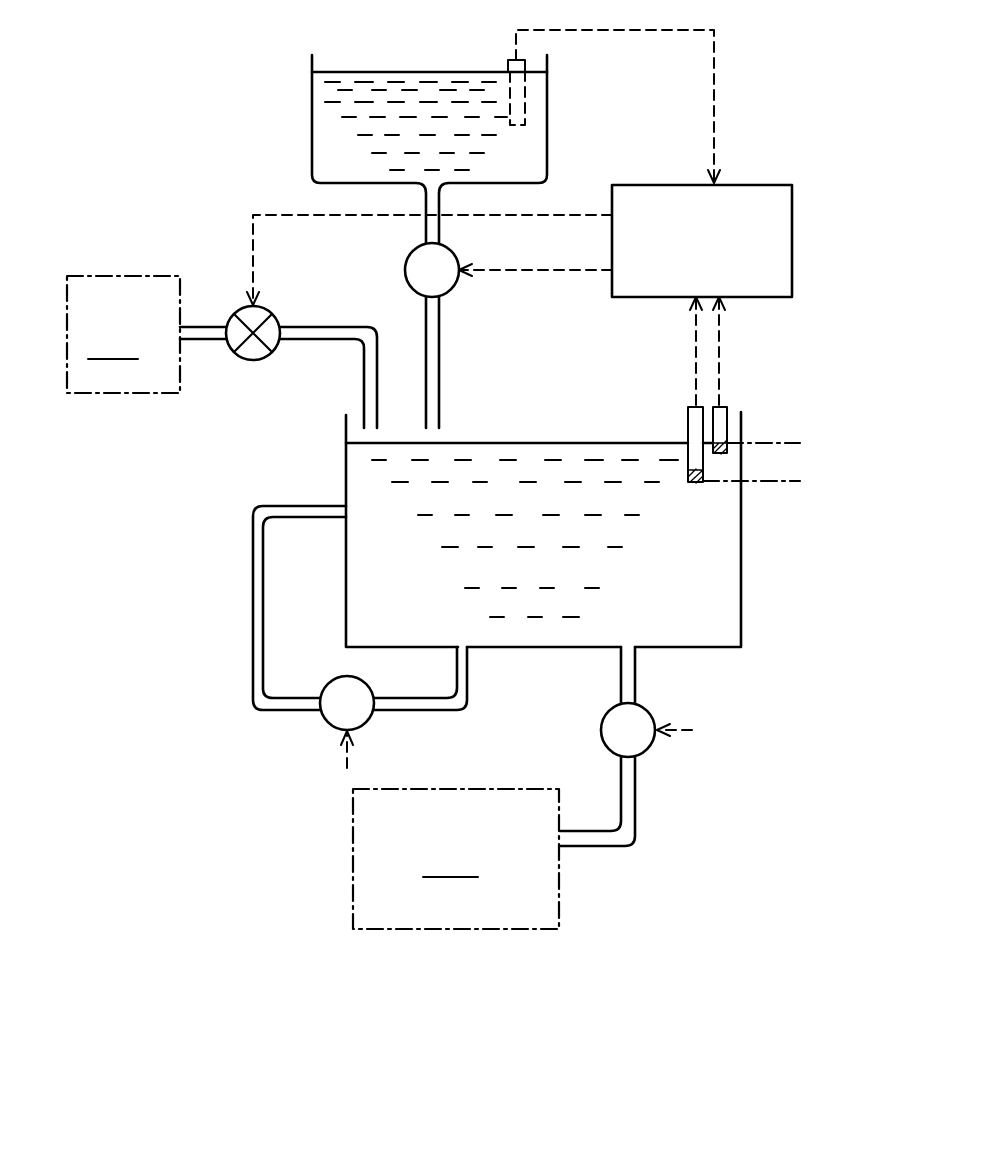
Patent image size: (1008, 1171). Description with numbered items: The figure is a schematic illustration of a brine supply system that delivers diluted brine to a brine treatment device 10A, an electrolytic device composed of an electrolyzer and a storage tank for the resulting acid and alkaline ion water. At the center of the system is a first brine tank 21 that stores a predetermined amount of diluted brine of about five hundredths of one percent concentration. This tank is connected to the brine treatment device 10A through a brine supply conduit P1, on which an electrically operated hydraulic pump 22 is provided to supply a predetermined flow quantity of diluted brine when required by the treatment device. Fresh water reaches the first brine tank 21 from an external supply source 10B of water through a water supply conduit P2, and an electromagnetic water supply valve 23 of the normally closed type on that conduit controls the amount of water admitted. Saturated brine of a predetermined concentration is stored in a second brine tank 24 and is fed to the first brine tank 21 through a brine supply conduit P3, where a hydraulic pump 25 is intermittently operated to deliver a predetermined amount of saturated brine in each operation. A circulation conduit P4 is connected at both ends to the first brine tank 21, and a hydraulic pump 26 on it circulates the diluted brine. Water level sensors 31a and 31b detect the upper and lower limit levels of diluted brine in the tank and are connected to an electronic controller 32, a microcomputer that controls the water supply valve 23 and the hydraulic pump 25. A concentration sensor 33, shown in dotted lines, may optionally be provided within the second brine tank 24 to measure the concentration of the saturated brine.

The brine treatment device 10A is at (456, 859).
The external supply source of water 10B is at (146, 334).
The first brine tank 21 is at (741, 583).
The hydraulic pump 22 is at (605, 716).
The electromagnetic water supply valve 23 is at (276, 352).
The second brine tank 24 is at (547, 130).
The hydraulic pump 25 is at (453, 290).
The hydraulic pump 26 is at (330, 723).
The water level sensor 31a is at (688, 425).
The water level sensor 31b is at (727, 417).
The electronic controller 32 is at (792, 228).
The concentration sensor 33 is at (505, 63).
The brine supply conduit P1 is at (636, 794).
The water supply conduit P2 is at (335, 327).
The brine supply conduit P3 is at (440, 380).
The circulation conduit P4 is at (253, 626).